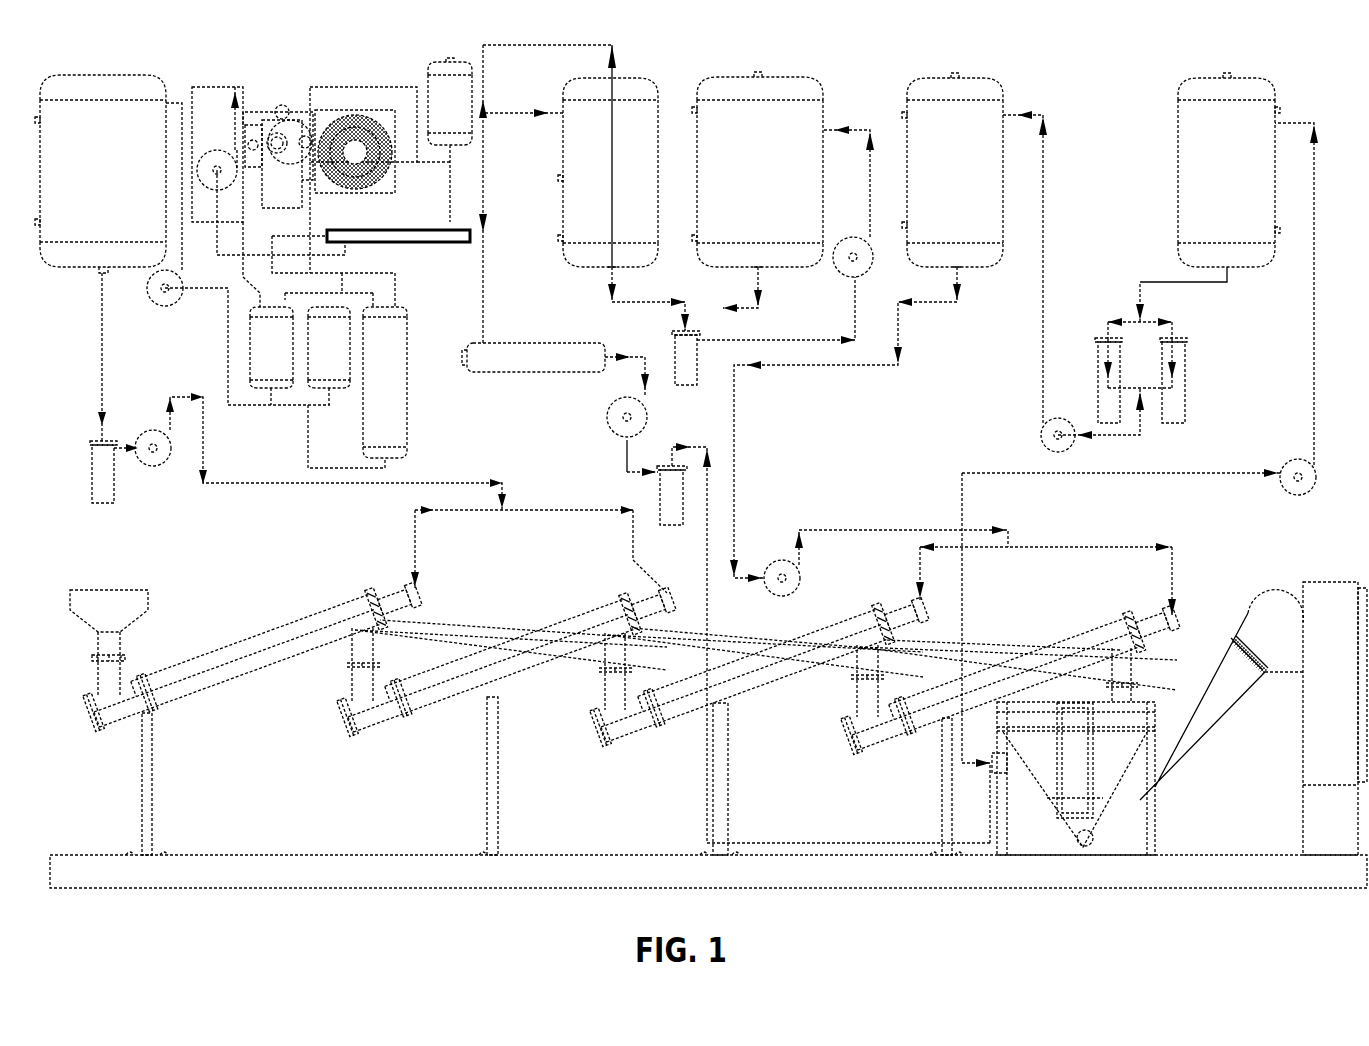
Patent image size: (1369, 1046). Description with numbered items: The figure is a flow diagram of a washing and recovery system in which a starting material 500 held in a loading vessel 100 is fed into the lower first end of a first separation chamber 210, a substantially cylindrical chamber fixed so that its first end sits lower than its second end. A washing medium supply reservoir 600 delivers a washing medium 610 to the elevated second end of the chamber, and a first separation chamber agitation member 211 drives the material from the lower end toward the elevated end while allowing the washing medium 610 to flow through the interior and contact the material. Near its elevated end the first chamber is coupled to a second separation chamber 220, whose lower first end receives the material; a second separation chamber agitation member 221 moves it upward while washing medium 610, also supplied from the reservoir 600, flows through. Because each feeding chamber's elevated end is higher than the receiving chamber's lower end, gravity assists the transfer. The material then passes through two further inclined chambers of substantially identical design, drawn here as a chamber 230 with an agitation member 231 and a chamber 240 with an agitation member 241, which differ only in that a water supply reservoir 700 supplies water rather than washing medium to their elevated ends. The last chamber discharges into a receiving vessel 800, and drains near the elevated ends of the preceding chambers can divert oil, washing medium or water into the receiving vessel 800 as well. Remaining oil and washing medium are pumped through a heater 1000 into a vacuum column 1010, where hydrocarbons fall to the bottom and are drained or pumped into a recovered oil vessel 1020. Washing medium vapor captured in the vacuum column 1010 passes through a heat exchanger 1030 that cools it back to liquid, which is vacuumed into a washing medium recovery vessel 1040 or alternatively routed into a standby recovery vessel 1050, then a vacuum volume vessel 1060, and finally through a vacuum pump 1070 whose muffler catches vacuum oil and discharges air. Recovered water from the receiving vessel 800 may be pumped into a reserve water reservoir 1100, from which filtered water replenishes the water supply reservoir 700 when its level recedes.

The loading vessel 100 is at (109, 611).
The starting material 500 is at (108, 654).
The first separation chamber 210 is at (232, 661).
The first separation chamber agitation member 211 is at (277, 645).
The second separation chamber 220 is at (486, 672).
The second separation chamber agitation member 221 is at (531, 650).
The third reactor tube 230 is at (739, 684).
The third reactor upper tube 231 is at (784, 660).
The fourth reactor tube 240 is at (990, 694).
The fourth reactor upper tube 241 is at (1035, 668).
The washing medium supply reservoir 600 is at (108, 172).
The washing medium 610 is at (103, 341).
The water supply reservoir 700 is at (952, 170).
The receiving vessel 800 is at (1147, 722).
The heater 1000 is at (533, 357).
The vacuum column 1010 is at (608, 172).
The recovered oil vessel 1020 is at (757, 169).
The heat exchanger 1030 is at (375, 268).
The washing medium recovery vessel 1040 is at (385, 382).
The standby recovery vessel 1050 is at (329, 347).
The vacuum volume vessel 1060 is at (271, 347).
The vacuum pump 1070 is at (278, 156).
The reserve water reservoir 1100 is at (1229, 170).